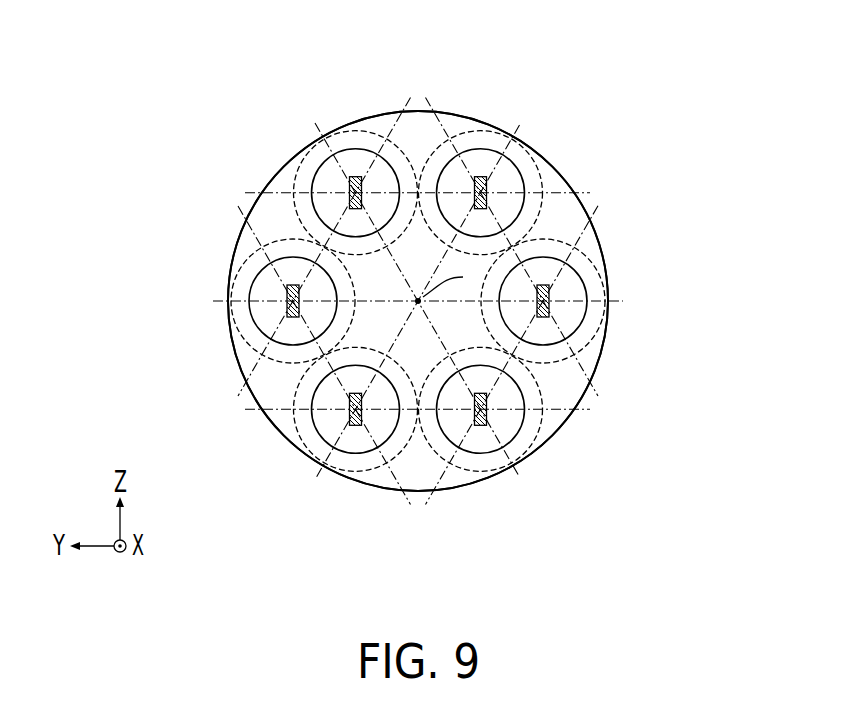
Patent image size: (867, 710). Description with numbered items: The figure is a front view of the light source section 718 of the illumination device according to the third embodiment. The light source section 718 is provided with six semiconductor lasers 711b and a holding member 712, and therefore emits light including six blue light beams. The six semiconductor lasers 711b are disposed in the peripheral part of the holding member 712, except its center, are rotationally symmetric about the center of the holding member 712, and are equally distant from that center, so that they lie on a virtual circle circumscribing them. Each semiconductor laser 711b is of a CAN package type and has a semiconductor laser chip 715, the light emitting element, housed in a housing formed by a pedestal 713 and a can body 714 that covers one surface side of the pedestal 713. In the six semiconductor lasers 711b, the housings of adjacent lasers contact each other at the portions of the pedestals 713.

The light source section 718 is at (553, 141).
The holding member 712 is at (385, 486).
The semiconductor laser 711b is at (239, 309).
The pedestal 713 is at (249, 257).
The can body 714 is at (265, 327).
The semiconductor laser chip 715 is at (287, 294).